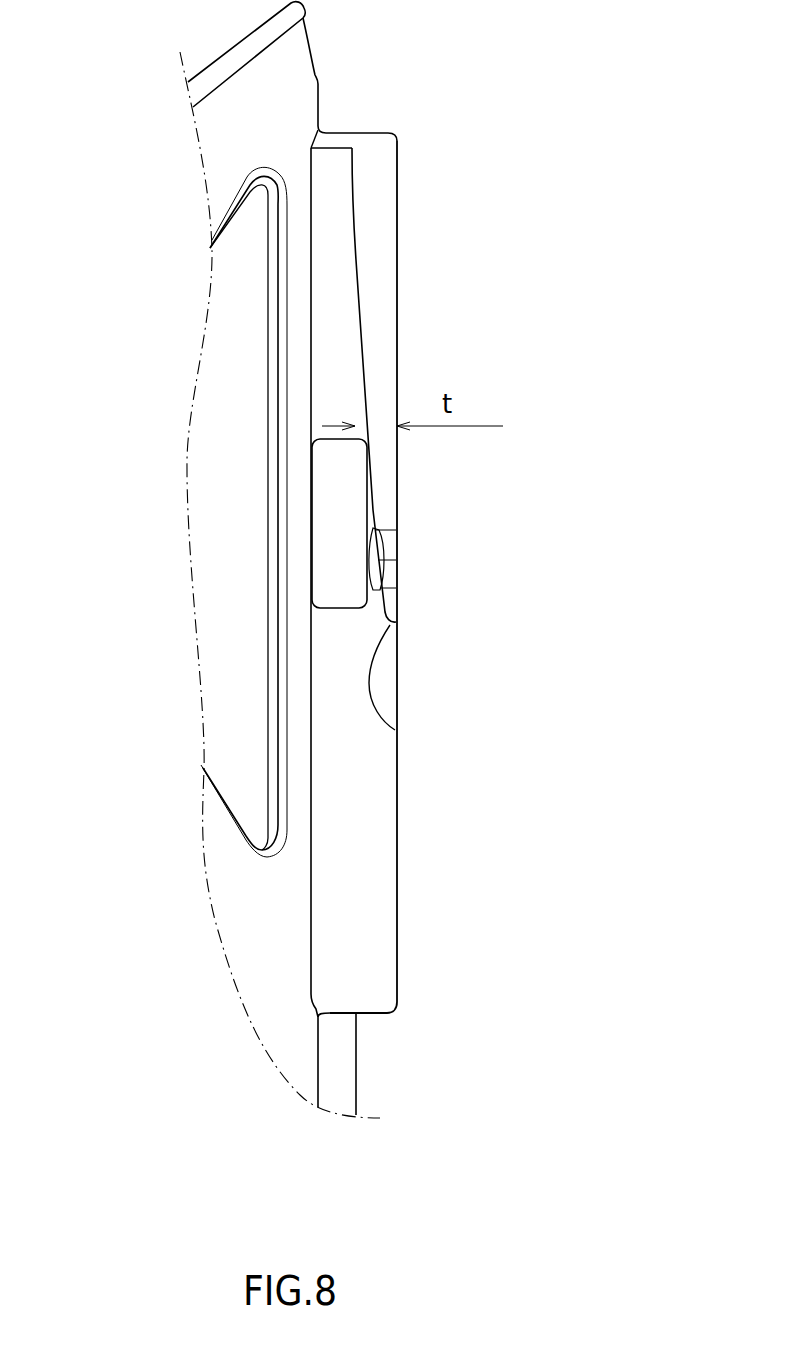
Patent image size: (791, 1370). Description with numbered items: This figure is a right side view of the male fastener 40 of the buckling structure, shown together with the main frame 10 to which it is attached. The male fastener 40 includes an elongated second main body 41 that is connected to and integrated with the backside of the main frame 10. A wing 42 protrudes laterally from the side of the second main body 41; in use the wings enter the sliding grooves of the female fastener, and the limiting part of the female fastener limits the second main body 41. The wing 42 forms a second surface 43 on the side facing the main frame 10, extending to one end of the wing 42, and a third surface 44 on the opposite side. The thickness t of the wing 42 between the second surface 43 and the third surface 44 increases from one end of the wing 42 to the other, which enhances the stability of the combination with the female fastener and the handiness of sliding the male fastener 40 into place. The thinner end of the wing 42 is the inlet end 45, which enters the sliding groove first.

The main frame 10 is at (230, 915).
The male fastener 40 is at (399, 135).
The second main body 41 is at (363, 967).
The wing 42 is at (383, 469).
The second surface 43 is at (352, 273).
The third surface 44 is at (397, 272).
The inlet end 45 is at (395, 730).